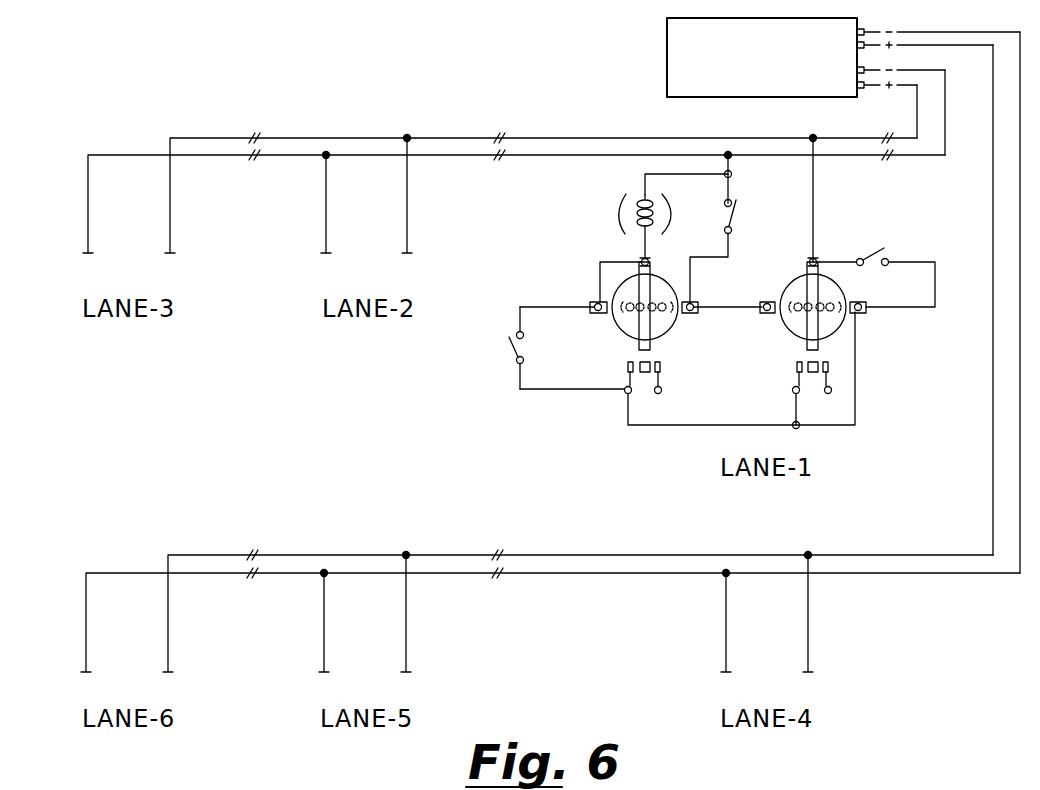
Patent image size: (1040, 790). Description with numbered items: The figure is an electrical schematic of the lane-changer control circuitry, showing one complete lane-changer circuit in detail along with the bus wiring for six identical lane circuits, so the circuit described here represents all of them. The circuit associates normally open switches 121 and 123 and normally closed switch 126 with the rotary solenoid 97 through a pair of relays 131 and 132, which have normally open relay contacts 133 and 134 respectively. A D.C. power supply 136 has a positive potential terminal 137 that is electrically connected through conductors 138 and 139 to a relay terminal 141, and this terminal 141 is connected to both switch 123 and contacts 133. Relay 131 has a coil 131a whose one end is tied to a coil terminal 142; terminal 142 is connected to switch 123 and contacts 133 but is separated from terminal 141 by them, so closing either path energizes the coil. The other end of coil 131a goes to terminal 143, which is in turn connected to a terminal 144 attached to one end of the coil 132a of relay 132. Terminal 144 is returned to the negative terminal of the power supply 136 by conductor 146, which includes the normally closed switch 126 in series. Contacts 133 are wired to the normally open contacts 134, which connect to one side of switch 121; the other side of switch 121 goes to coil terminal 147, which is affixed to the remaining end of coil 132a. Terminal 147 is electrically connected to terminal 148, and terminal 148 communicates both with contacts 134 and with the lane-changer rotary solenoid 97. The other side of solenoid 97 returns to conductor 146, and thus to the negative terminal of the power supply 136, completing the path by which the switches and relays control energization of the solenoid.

The rotary solenoid 97 is at (620, 206).
The switch 121 is at (508, 345).
The switch 123 is at (869, 250).
The switch 126 is at (738, 214).
The relay 131 is at (795, 340).
The coil 131a is at (794, 319).
The relay 132 is at (627, 340).
The coil 132a is at (628, 319).
The relay contacts 133 is at (811, 378).
The relay contacts 134 is at (643, 378).
The power supply 136 is at (727, 99).
The positive potential terminal 137 is at (866, 91).
The conductor 138 is at (838, 134).
The conductor 139 is at (817, 195).
The relay terminal 141 is at (818, 257).
The coil terminal 142 is at (864, 312).
The terminal 143 is at (767, 299).
The terminal 144 is at (697, 303).
The conductor 146 is at (740, 190).
The coil terminal 147 is at (594, 302).
The terminal 148 is at (637, 260).